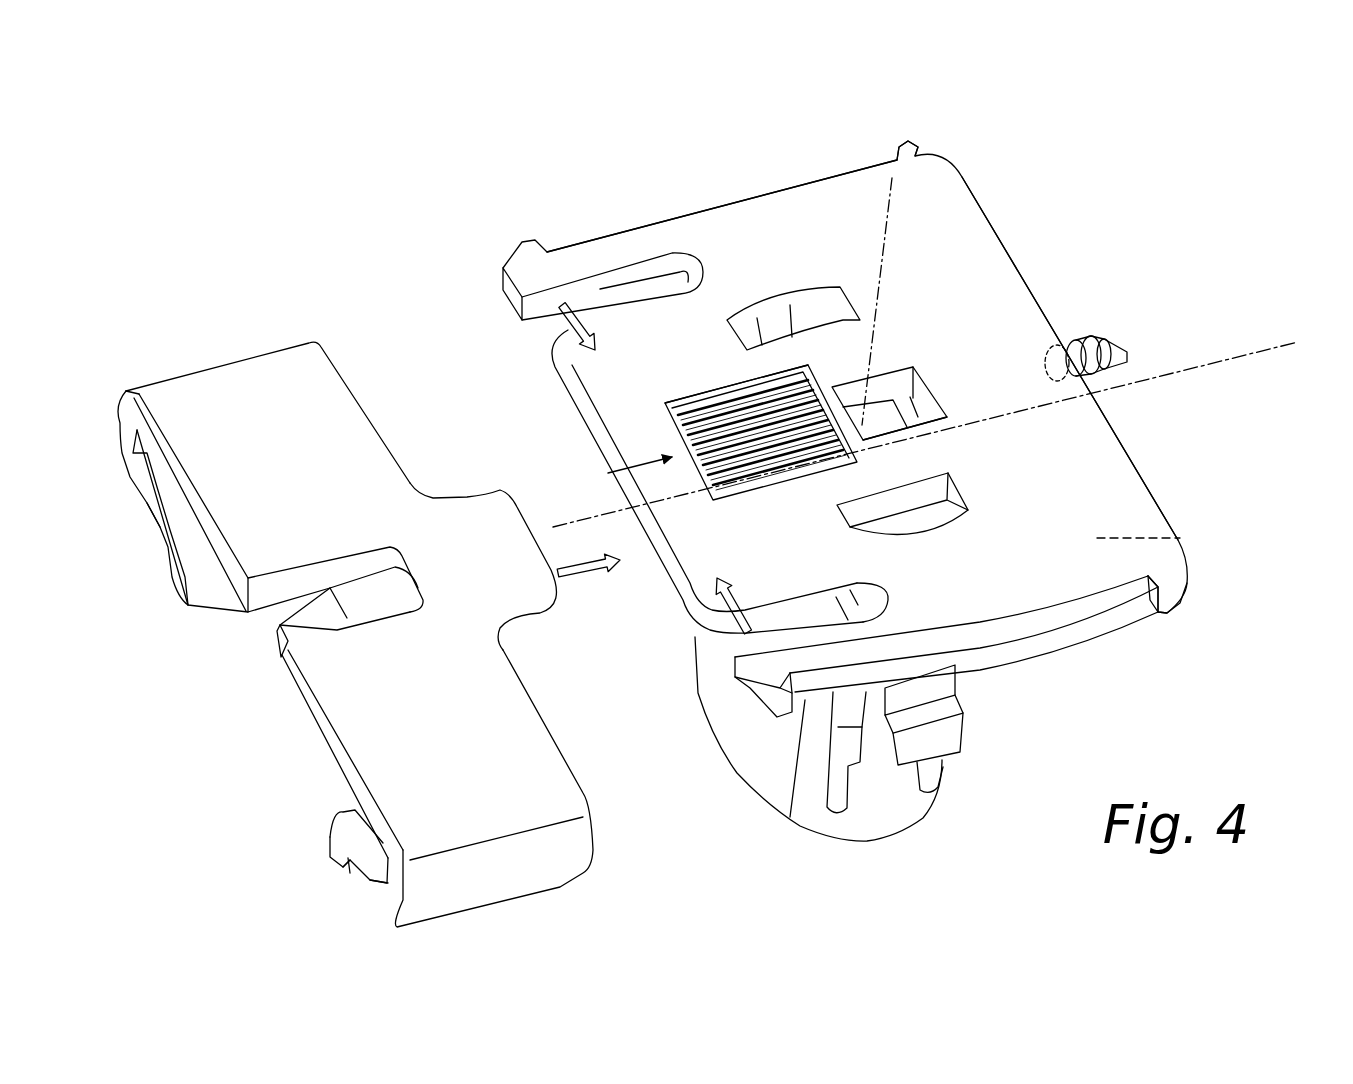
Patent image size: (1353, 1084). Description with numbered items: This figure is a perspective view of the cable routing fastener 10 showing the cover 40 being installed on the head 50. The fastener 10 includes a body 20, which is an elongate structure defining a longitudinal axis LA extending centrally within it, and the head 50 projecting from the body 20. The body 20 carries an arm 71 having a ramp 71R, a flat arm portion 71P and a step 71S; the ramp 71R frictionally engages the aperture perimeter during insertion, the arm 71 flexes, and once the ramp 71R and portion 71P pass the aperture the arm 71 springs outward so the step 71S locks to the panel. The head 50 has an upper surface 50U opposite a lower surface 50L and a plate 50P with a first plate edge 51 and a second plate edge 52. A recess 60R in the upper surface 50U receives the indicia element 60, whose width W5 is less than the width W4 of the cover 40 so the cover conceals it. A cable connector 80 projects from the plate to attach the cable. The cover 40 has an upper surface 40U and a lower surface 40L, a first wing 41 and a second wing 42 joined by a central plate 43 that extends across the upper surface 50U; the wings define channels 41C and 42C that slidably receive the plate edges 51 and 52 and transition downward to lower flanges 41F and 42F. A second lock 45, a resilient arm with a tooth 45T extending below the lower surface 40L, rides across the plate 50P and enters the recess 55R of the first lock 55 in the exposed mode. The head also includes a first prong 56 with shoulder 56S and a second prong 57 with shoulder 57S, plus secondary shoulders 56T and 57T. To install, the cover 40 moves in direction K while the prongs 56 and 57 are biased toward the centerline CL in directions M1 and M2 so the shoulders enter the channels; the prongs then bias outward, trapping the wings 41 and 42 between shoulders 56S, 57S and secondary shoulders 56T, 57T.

The cable routing fastener 10 is at (1032, 125).
The body 20 is at (953, 803).
The cover 40 is at (235, 357).
The upper surface of cover 40U is at (315, 350).
The lower surface of cover 40L is at (322, 720).
The first wing 41 is at (548, 746).
The first channel 41C is at (370, 840).
The first lower flange 41F is at (340, 867).
The second wing 42 is at (135, 405).
The second channel 42C is at (162, 485).
The second lower flange 42F is at (173, 578).
The central plate 43 is at (365, 478).
The second lock 45 is at (296, 625).
The tooth 45T is at (273, 640).
The head 50 is at (650, 220).
The plate 50P is at (1003, 315).
The upper surface of head 50U is at (1126, 510).
The lower surface of head 50L is at (1165, 538).
The first plate edge 51 is at (1010, 627).
The second plate edge 52 is at (757, 193).
The first lock 55 is at (920, 417).
The recess of first lock 55R is at (885, 438).
The first prong 56 is at (823, 650).
The first shoulder 56S is at (763, 703).
The first secondary shoulder 56T is at (1173, 602).
The second prong 57 is at (617, 262).
The second shoulder 57S is at (525, 242).
The second secondary shoulder 57T is at (920, 140).
The indicia element 60 is at (700, 478).
The recess 60R is at (664, 405).
The arm 71 is at (916, 772).
The step 71S is at (957, 705).
The flat arm portion 71P is at (960, 735).
The ramp 71R is at (877, 767).
The cable connector 80 is at (1093, 330).
The direction K is at (588, 575).
The direction M1 is at (735, 593).
The direction M2 is at (595, 333).
The width of cover W4 is at (515, 667).
The width of indicia element W5 is at (850, 408).
The longitudinal axis LA is at (893, 200).
The centerline CL is at (1238, 367).